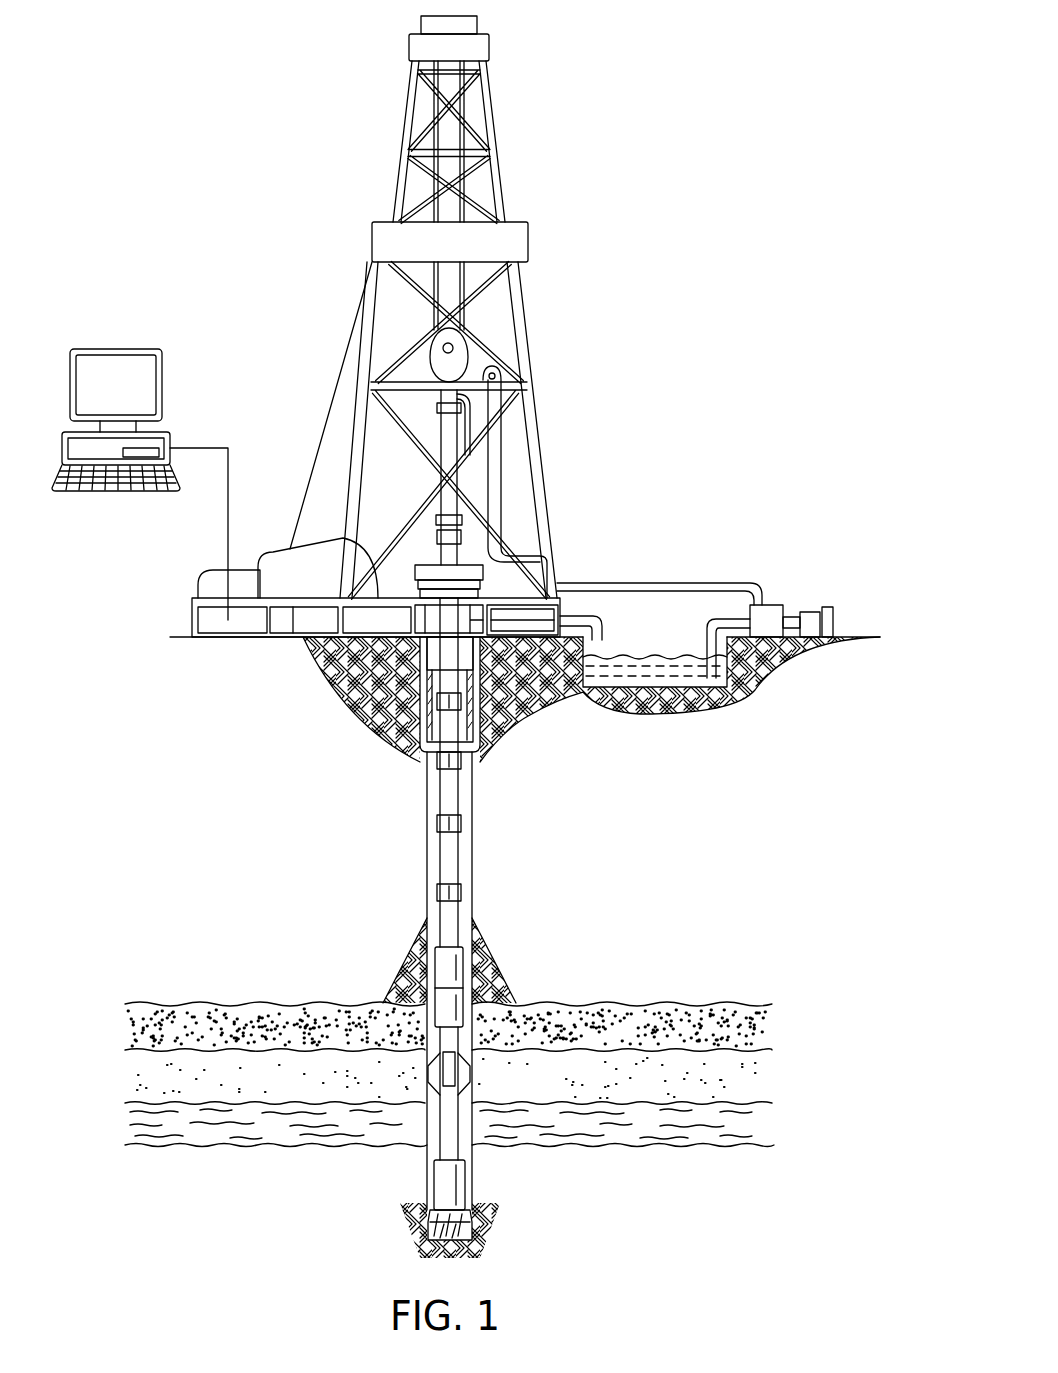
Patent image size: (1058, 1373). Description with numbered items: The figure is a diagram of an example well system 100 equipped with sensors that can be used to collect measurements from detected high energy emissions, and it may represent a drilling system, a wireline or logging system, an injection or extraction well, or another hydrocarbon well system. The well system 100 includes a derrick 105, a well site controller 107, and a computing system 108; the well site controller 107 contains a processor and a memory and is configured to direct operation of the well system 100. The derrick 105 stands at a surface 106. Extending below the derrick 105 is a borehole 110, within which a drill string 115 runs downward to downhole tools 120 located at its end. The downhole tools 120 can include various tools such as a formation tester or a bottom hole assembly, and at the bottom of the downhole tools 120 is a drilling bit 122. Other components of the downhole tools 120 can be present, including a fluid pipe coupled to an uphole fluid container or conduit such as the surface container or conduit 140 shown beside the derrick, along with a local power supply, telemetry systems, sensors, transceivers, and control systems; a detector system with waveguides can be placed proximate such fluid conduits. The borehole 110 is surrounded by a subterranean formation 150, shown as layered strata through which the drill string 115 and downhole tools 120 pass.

The well system 100 is at (231, 126).
The derrick 105 is at (523, 318).
The surface 106 is at (855, 637).
The well site controller 107 is at (313, 623).
The computing system 108 is at (116, 349).
The borehole 110 is at (427, 845).
The drill string 115 is at (459, 862).
The downhole tools 120 is at (519, 1157).
The drilling bit 122 is at (425, 1226).
The surface container or conduit 140 is at (659, 656).
The subterranean formation 150 is at (786, 1087).